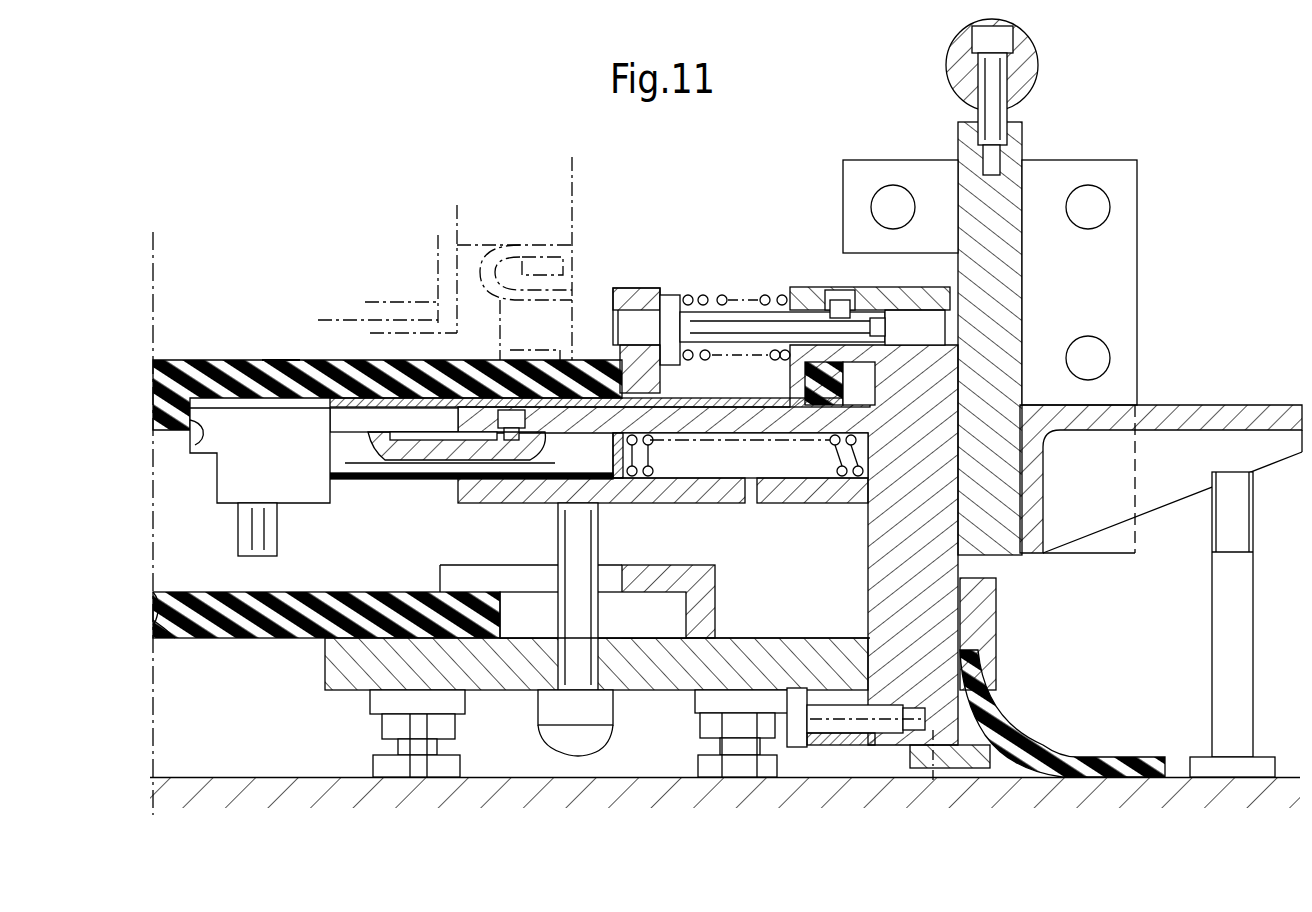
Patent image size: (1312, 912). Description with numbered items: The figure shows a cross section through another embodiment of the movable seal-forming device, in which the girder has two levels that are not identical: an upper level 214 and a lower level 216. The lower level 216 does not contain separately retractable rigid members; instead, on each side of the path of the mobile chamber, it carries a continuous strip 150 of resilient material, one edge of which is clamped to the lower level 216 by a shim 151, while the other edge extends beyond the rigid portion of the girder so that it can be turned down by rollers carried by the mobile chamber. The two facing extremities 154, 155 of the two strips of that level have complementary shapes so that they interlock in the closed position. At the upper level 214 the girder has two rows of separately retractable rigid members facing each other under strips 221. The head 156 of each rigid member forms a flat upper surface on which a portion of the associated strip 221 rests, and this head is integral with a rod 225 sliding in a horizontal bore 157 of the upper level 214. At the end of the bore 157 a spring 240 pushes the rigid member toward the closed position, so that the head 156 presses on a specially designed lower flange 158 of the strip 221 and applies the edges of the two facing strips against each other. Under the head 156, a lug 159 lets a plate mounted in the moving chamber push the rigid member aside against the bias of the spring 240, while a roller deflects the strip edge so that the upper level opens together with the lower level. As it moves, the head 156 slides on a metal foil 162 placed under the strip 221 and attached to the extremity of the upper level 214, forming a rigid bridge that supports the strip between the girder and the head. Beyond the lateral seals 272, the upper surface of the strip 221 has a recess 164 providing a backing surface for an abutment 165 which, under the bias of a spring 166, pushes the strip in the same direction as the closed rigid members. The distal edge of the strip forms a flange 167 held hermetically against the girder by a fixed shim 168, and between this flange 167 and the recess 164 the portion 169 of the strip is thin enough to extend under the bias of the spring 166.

The continuous strip 150 is at (262, 636).
The shim 151 is at (657, 567).
The strip extremity 154 is at (172, 632).
The strip extremity 155 is at (146, 592).
The head 156 is at (225, 485).
The horizontal bore 157 is at (722, 469).
The lower flange 158 is at (203, 428).
The lug 159 is at (265, 533).
The metal foil 162 is at (338, 377).
The recess 164 is at (650, 372).
The abutment 165 is at (636, 297).
The spring 166 is at (700, 296).
The flange 167 is at (806, 383).
The fixed shim 168 is at (812, 292).
The thin strip portion 169 is at (727, 398).
The upper level 214 is at (488, 500).
The lower level 216 is at (790, 650).
The strip 221 is at (280, 366).
The rod 225 is at (395, 478).
The spring 240 is at (838, 478).
The lateral seals 272 is at (562, 330).